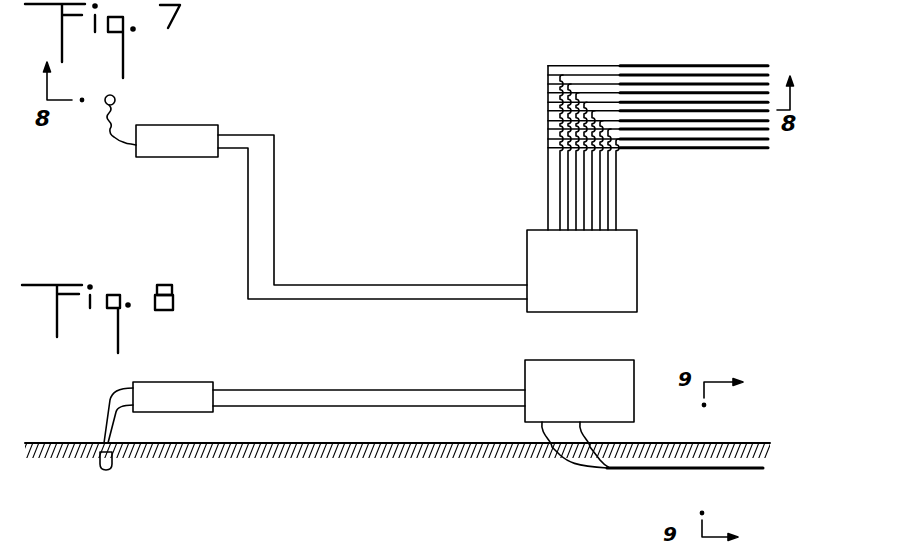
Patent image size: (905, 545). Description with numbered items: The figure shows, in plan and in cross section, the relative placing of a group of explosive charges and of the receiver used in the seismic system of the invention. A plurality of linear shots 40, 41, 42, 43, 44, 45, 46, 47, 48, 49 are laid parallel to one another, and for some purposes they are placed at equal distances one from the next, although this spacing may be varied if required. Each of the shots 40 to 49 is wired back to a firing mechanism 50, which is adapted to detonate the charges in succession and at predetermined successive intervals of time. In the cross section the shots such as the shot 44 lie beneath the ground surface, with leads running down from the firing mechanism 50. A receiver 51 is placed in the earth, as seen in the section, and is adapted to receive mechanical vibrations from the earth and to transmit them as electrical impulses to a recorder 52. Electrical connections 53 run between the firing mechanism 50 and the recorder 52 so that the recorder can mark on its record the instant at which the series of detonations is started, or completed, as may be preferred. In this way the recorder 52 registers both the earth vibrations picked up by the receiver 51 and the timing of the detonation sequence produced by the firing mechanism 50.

In FIG. 7, the linear shot 40 is at (628, 65).
In FIG. 7, the linear shot 41 is at (647, 75).
In FIG. 7, the linear shot 42 is at (675, 84).
In FIG. 7, the linear shot 43 is at (697, 92).
In FIG. 7, the linear shot 44 is at (720, 102).
In FIG. 8, the linear shot 44 is at (642, 468).
In FIG. 7, the linear shot 45 is at (633, 112).
In FIG. 7, the linear shot 46 is at (652, 121).
In FIG. 7, the linear shot 47 is at (678, 130).
In FIG. 7, the linear shot 48 is at (729, 140).
In FIG. 7, the linear shot 49 is at (753, 149).
In FIG. 7, the firing mechanism 50 is at (638, 245).
In FIG. 8, the firing mechanism 50 is at (634, 363).
In FIG. 7, the receiver 51 is at (115, 97).
In FIG. 8, the receiver 51 is at (102, 468).
In FIG. 7, the recorder 52 is at (205, 123).
In FIG. 8, the recorder 52 is at (190, 380).
In FIG. 7, the electrical connections 53 is at (343, 299).
In FIG. 8, the electrical connections 53 is at (330, 407).